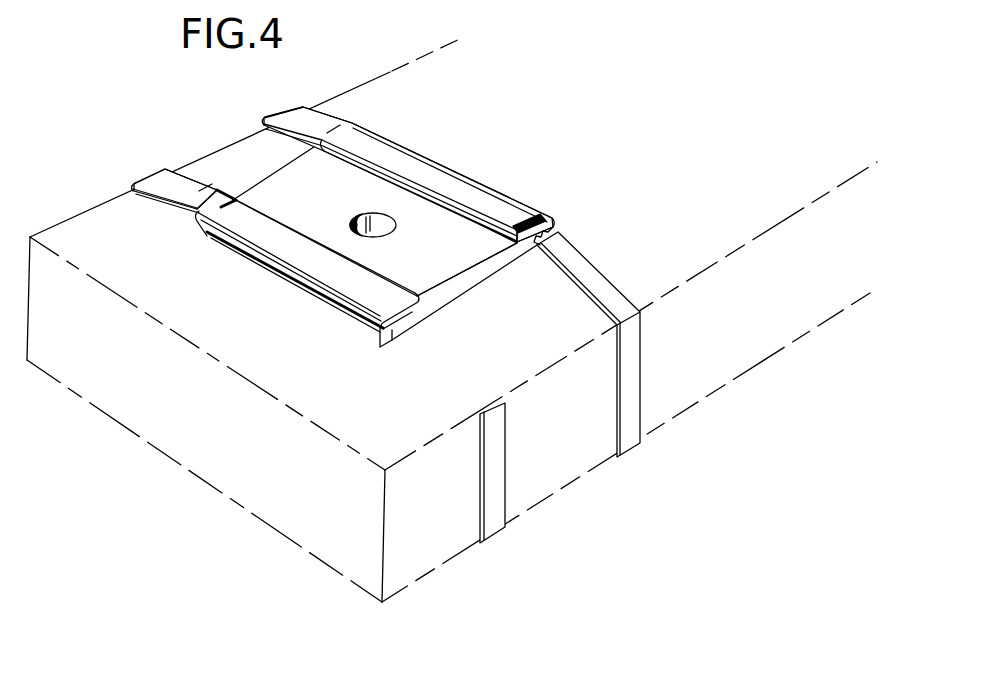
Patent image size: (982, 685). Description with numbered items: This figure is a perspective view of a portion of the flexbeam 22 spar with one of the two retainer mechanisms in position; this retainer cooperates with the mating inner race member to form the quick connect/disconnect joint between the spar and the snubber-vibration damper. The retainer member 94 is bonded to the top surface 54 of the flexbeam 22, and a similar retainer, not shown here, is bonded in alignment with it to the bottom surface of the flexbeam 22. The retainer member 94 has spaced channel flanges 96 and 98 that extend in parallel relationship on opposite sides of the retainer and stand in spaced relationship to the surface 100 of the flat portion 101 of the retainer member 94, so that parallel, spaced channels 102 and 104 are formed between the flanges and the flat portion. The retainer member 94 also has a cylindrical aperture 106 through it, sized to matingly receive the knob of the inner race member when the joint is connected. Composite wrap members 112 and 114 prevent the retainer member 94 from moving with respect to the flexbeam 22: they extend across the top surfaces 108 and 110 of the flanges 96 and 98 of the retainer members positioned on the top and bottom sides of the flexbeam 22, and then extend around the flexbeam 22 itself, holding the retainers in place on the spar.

The flexbeam 22 is at (205, 425).
The top surface 54 is at (133, 243).
The retainer member 94 is at (493, 294).
The channel flange 96 is at (412, 314).
The channel flange 98 is at (557, 225).
The surface of flat portion 100 is at (463, 259).
The flat portion 101 is at (395, 342).
The channel 102 is at (405, 315).
The channel 104 is at (514, 244).
The cylindrical aperture 106 is at (360, 215).
The top surface of flange 108 is at (317, 255).
The top surface of flange 110 is at (498, 192).
The composite wrap member 112 is at (178, 180).
The composite wrap member 114 is at (616, 297).